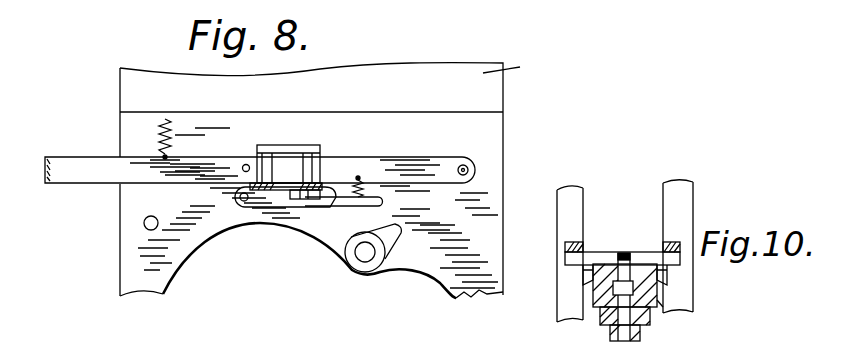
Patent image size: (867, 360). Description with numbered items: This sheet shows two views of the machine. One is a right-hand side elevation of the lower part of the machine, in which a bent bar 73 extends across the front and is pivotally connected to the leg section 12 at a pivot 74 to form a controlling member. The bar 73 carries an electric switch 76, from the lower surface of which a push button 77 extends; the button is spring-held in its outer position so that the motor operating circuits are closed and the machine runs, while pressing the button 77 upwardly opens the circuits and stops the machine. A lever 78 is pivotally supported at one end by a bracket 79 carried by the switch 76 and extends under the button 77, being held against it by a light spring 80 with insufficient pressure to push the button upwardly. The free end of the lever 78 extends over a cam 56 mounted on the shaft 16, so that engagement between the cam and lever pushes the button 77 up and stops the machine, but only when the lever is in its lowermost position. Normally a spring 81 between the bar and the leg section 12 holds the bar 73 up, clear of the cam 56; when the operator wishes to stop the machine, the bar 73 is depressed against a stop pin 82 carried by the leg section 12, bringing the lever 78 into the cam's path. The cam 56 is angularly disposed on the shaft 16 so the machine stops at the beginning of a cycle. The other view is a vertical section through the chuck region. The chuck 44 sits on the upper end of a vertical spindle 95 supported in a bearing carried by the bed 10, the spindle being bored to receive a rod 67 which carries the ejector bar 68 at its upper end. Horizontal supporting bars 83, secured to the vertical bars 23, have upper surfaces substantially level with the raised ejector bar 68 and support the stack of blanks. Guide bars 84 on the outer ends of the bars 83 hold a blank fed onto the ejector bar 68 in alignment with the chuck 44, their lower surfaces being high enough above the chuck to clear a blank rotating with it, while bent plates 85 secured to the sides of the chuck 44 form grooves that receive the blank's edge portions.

In FIG. 8, the bed 10 is at (515, 67).
In FIG. 8, the leg section 12 is at (503, 191).
In FIG. 8, the shaft 16 is at (360, 253).
In FIG. 10, the vertical bars 23 is at (663, 186).
In FIG. 10, the chuck 44 is at (665, 306).
In FIG. 8, the cam 56 is at (357, 271).
In FIG. 10, the rod 67 is at (640, 338).
In FIG. 10, the ejector bar 68 is at (622, 252).
In FIG. 8, the bent bar 73 is at (101, 178).
In FIG. 8, the pivot 74 is at (463, 164).
In FIG. 8, the electric switch 76 is at (300, 150).
In FIG. 8, the push button 77 is at (326, 192).
In FIG. 8, the lever 78 is at (286, 208).
In FIG. 8, the bracket 79 is at (244, 188).
In FIG. 8, the light spring 80 is at (385, 192).
In FIG. 8, the spring 81 is at (172, 141).
In FIG. 8, the stop pin 82 is at (146, 226).
In FIG. 10, the horizontal supporting bars 83 is at (594, 264).
In FIG. 10, the guide bars 84 is at (572, 242).
In FIG. 10, the bent plates 85 is at (584, 274).
In FIG. 10, the vertical spindle 95 is at (604, 326).